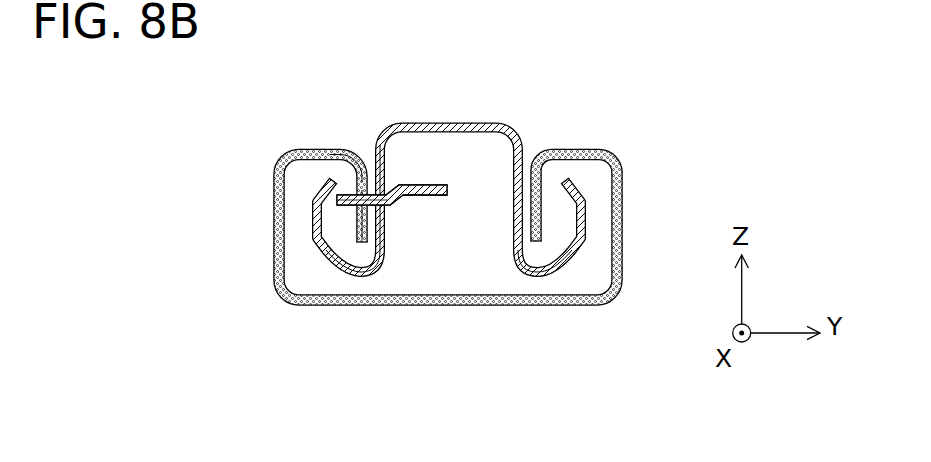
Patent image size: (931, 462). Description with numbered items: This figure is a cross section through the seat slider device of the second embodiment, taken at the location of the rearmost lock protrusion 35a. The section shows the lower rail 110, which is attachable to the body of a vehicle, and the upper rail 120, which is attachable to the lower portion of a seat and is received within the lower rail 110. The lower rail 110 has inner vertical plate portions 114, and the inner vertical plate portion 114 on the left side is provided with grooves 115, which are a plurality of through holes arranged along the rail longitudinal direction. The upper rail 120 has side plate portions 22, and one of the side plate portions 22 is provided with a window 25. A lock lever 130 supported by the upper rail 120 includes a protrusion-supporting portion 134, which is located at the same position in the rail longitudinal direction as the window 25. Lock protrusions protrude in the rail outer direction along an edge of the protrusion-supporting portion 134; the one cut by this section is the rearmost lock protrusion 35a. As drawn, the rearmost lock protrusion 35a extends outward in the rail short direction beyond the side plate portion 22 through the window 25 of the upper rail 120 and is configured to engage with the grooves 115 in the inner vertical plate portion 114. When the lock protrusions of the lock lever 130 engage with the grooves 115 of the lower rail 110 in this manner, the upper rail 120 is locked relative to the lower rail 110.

The lower rail 110 is at (626, 147).
The inner vertical plate portion 114 is at (353, 228).
The grooves 115 is at (358, 186).
The upper rail 120 is at (500, 112).
The window 25 is at (382, 190).
The side plate portions 22 is at (384, 238).
The lock lever 130 is at (426, 180).
The protrusion-supporting portion 134 is at (423, 197).
The rearmost lock protrusion 35a is at (338, 199).